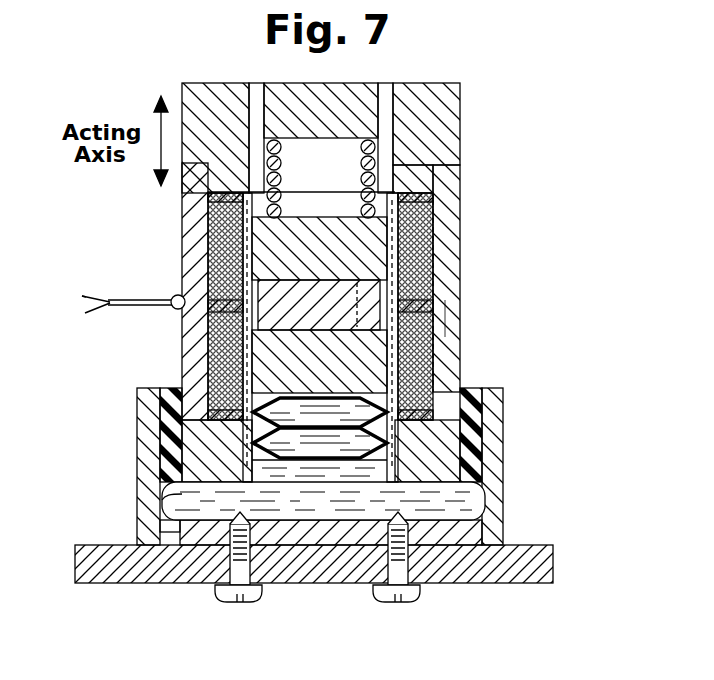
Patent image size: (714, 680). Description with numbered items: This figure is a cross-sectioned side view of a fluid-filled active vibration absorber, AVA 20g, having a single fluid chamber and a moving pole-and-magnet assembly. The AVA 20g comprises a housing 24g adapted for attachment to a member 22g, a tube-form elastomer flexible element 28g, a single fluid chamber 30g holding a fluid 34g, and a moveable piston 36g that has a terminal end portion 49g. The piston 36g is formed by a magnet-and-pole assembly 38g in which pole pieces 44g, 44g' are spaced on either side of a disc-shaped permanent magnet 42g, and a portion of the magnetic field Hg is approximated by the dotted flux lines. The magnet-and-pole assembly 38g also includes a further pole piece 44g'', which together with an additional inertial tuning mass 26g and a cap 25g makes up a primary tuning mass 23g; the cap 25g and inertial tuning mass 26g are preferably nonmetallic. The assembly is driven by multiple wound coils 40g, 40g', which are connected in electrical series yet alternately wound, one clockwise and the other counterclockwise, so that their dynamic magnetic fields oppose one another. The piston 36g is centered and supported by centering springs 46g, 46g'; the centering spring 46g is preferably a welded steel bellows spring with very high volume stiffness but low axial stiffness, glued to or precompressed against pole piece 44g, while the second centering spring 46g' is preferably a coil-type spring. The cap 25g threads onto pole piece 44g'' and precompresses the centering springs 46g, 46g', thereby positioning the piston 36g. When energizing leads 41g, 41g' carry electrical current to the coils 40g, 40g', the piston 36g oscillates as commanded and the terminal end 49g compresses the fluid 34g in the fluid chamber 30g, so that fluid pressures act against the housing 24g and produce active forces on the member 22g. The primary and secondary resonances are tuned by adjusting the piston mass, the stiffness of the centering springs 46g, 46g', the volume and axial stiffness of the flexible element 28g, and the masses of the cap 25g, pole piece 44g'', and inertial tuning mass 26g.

The AVA 20g is at (462, 253).
The member 22g is at (293, 584).
The primary tuning mass 23g is at (182, 258).
The housing 24g is at (503, 465).
The cap 25g is at (478, 428).
The additional inertial tuning mass 26g is at (460, 128).
The flexible element 28g is at (137, 420).
The fluid chamber 30g is at (345, 509).
The fluid 34g is at (162, 500).
The piston 36g is at (241, 355).
The magnet-and-pole assembly 38g is at (182, 229).
The wound coil 40g is at (479, 337).
The wound coil 40g' is at (488, 303).
The energizing lead 41g is at (96, 314).
The energizing lead 41g' is at (47, 280).
The permanent magnet 42g is at (338, 315).
The pole piece 44g is at (319, 361).
The pole piece 44g' is at (319, 248).
The pole piece 44g'' is at (508, 296).
The centering spring 46g is at (180, 260).
The centering spring 46g' is at (470, 179).
The terminal end portion 49g is at (310, 398).
The magnetic field Hg is at (460, 338).